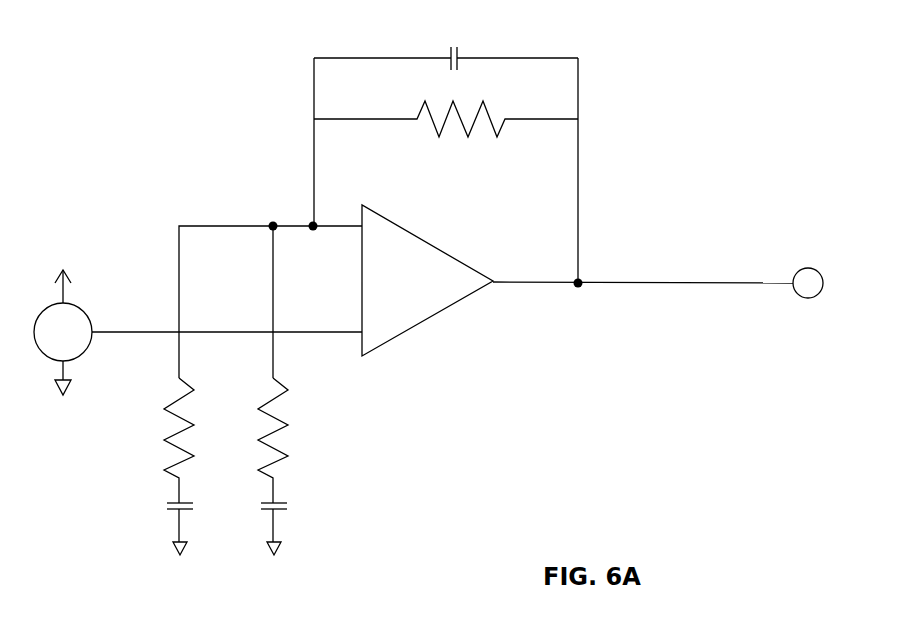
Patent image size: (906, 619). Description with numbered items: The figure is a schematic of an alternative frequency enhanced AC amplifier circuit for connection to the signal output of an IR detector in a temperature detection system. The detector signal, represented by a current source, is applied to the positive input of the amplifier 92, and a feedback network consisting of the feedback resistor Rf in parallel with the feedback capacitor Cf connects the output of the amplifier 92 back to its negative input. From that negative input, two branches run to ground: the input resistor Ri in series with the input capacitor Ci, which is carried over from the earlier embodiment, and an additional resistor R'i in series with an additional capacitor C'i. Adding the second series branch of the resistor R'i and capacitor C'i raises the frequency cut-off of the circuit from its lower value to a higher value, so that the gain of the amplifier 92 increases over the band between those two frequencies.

The amplifier 92 is at (439, 314).
The feedback capacitor Cf is at (446, 46).
The feedback resistor Rf is at (446, 130).
The additional resistor R'i is at (197, 440).
The additional capacitor C'i is at (196, 526).
The input resistor Ri is at (288, 440).
The input capacitor Ci is at (287, 526).